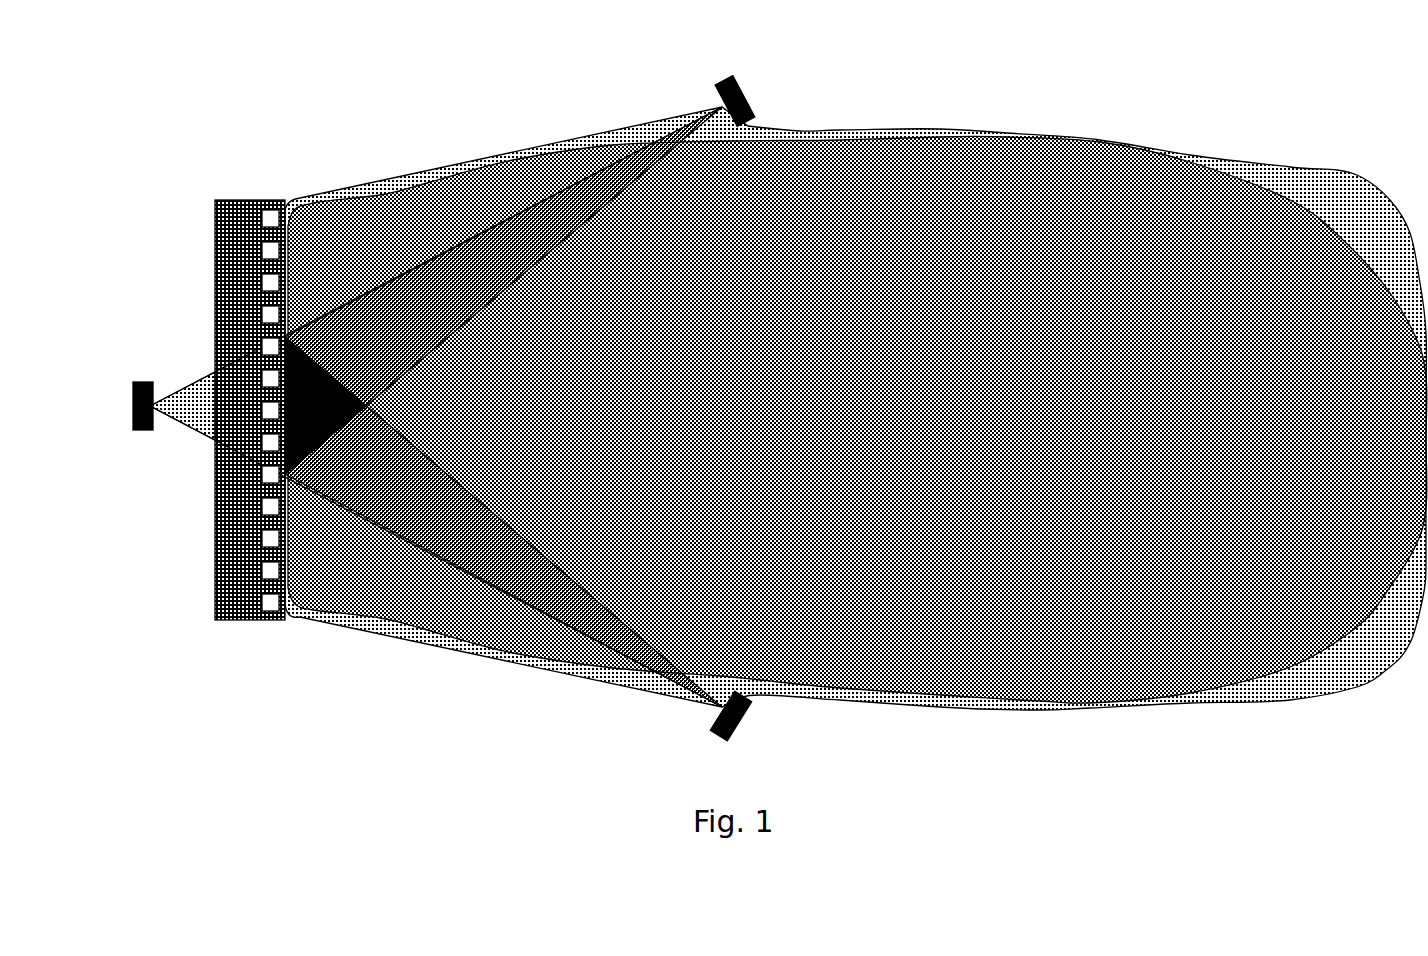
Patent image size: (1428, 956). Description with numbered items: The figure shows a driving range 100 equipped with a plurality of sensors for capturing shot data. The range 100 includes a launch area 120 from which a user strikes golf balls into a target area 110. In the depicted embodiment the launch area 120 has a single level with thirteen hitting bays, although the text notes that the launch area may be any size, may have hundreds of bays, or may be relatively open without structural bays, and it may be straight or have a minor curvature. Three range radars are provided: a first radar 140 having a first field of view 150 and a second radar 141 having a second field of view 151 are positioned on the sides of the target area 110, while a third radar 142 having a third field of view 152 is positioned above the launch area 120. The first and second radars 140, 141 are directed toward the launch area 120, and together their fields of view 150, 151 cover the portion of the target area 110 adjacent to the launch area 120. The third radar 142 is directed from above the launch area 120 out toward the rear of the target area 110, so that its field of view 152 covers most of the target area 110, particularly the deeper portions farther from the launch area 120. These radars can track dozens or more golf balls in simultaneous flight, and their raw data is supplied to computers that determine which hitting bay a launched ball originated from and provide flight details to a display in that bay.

The driving range 100 is at (412, 124).
The target area 110 is at (1335, 170).
The launch area 120 is at (252, 413).
The first radar 140 is at (713, 731).
The second radar 141 is at (724, 80).
The third radar 142 is at (133, 385).
The first field of view 150 is at (613, 690).
The second field of view 151 is at (553, 140).
The third field of view 152 is at (923, 130).